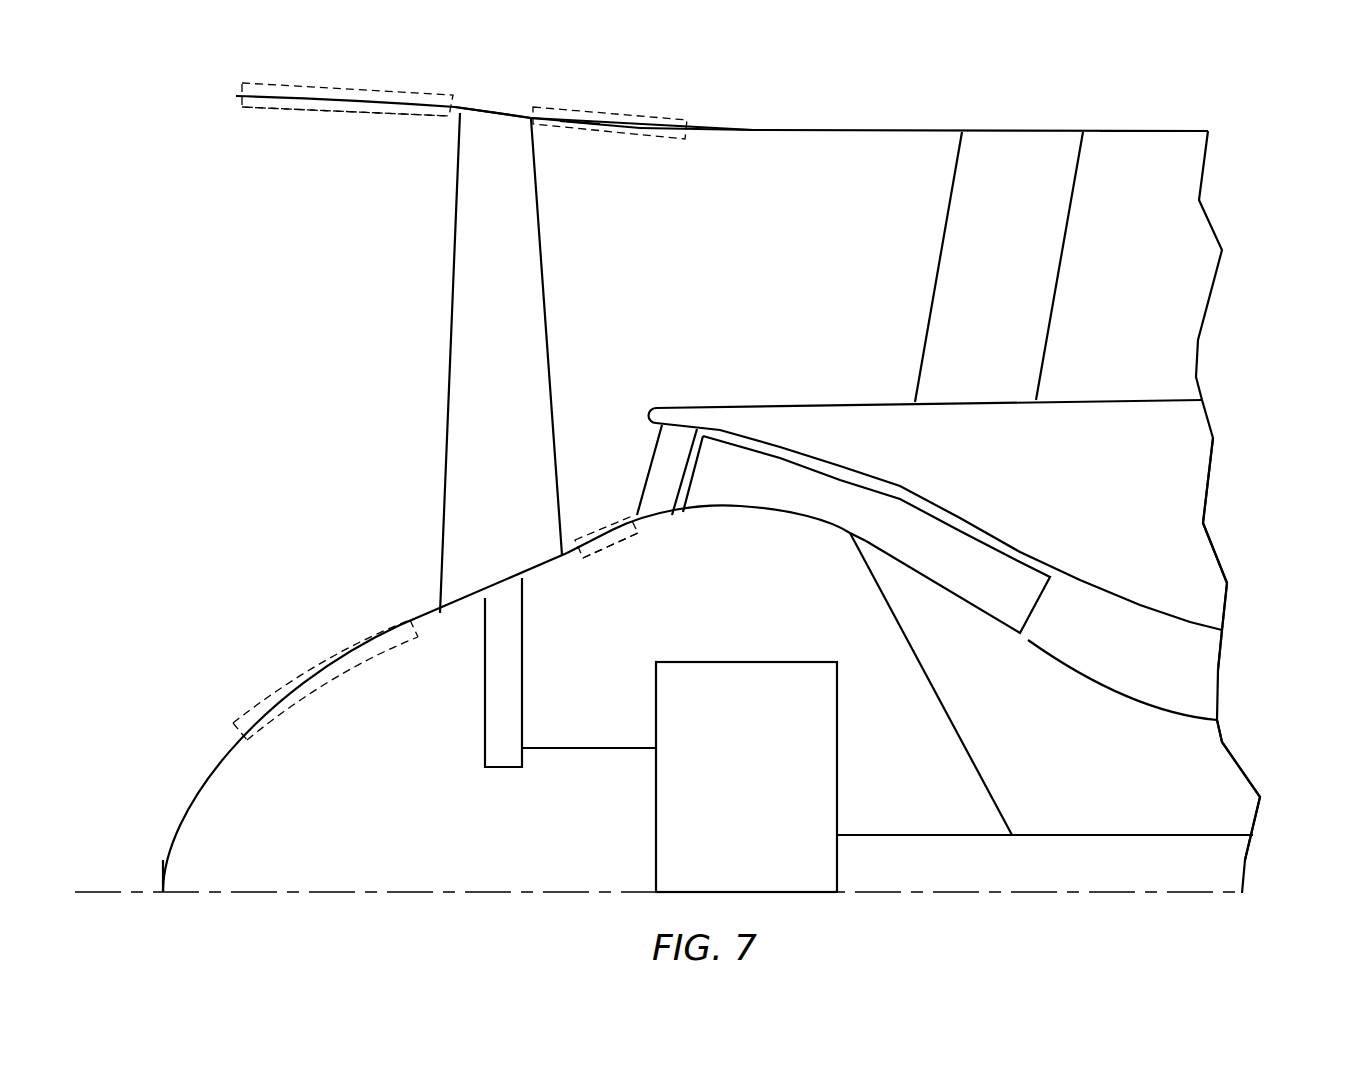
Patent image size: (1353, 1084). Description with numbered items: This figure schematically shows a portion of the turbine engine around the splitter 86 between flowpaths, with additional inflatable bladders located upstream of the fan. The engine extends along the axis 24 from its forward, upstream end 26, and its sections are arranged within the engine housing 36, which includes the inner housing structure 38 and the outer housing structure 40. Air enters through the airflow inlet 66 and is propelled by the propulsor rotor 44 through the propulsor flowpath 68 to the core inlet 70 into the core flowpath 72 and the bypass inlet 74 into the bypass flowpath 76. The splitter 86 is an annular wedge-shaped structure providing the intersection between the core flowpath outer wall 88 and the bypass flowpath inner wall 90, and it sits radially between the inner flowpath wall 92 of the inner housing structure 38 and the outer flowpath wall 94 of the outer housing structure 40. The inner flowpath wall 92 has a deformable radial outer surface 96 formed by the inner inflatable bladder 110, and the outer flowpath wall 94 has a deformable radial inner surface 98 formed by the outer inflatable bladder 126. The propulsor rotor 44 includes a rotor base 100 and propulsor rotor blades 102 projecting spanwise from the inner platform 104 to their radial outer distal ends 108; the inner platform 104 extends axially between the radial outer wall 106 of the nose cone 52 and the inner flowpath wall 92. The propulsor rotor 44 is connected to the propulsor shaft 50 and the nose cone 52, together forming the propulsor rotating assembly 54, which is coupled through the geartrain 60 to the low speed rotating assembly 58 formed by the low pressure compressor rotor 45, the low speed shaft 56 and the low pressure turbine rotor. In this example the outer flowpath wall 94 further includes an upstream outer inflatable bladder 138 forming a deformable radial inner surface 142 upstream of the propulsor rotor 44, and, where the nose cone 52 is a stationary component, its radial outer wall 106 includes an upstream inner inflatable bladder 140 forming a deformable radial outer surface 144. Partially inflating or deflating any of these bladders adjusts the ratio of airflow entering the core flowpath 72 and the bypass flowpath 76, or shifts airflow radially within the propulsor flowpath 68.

The axis 24 is at (1205, 895).
The upstream end 26 is at (163, 886).
The engine housing 36 is at (1212, 121).
The inner housing structure 38 is at (1210, 613).
The outer housing structure 40 is at (1161, 120).
The propulsor rotor 44 is at (426, 527).
The low pressure compressor rotor 45 is at (975, 742).
The propulsor shaft 50 is at (600, 749).
The nose cone 52 is at (162, 790).
The propulsor rotating assembly 54 is at (456, 770).
The low speed shaft 56 is at (1225, 838).
The low speed rotating assembly 58 is at (1232, 816).
The geartrain 60 is at (759, 789).
The airflow inlet 66 is at (196, 372).
The propulsor flowpath 68 is at (361, 379).
The core inlet 70 is at (612, 455).
The core flowpath 72 is at (1139, 664).
The bypass inlet 74 is at (632, 270).
The bypass flowpath 76 is at (1139, 289).
The splitter 86 is at (647, 412).
The core flowpath outer wall 88 is at (728, 432).
The bypass flowpath inner wall 90 is at (720, 403).
The inner flowpath wall 92 is at (592, 535).
The outer flowpath wall 94 is at (660, 140).
The deformable radial outer surface 96 is at (622, 520).
The deformable radial inner surface 98 is at (590, 121).
The rotor base 100 is at (545, 640).
The propulsor rotor blades 102 is at (519, 414).
The inner platform 104 is at (545, 569).
The nose cone radial outer wall 106 is at (322, 722).
The radial outer distal end 108 is at (487, 112).
The inner inflatable bladder 110 is at (600, 553).
The outer inflatable bladder 126 is at (586, 107).
The upstream outer inflatable bladder 138 is at (338, 111).
The upstream inner inflatable bladder 140 is at (303, 668).
The deformable radial inner surface 142 is at (262, 97).
The deformable radial outer surface 144 is at (212, 752).